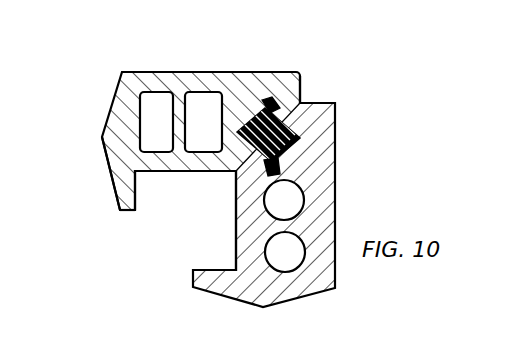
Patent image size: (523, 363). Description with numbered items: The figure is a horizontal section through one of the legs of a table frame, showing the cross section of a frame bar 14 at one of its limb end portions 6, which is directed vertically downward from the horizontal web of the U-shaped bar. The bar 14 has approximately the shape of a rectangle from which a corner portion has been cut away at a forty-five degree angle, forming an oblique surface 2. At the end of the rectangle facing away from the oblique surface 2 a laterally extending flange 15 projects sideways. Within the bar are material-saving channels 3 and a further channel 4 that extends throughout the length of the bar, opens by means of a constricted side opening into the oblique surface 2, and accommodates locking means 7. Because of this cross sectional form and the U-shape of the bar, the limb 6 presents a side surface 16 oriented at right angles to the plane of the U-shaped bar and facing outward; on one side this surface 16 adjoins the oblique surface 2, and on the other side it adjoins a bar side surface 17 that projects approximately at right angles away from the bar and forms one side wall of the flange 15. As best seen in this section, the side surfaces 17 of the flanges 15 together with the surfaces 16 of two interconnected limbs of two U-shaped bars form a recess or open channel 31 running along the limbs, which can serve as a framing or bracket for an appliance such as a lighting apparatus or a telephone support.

The oblique surface 2 is at (301, 102).
The material-saving channels 3 is at (193, 105).
The channel 4 is at (276, 177).
The limb end portion 6 is at (335, 206).
The locking means 7 is at (262, 110).
The frame bar 14 is at (200, 66).
The laterally extending flange 15 is at (119, 208).
The side surface 16 is at (166, 173).
The bar side surface 17 is at (136, 212).
The recess or open channel 31 is at (200, 222).